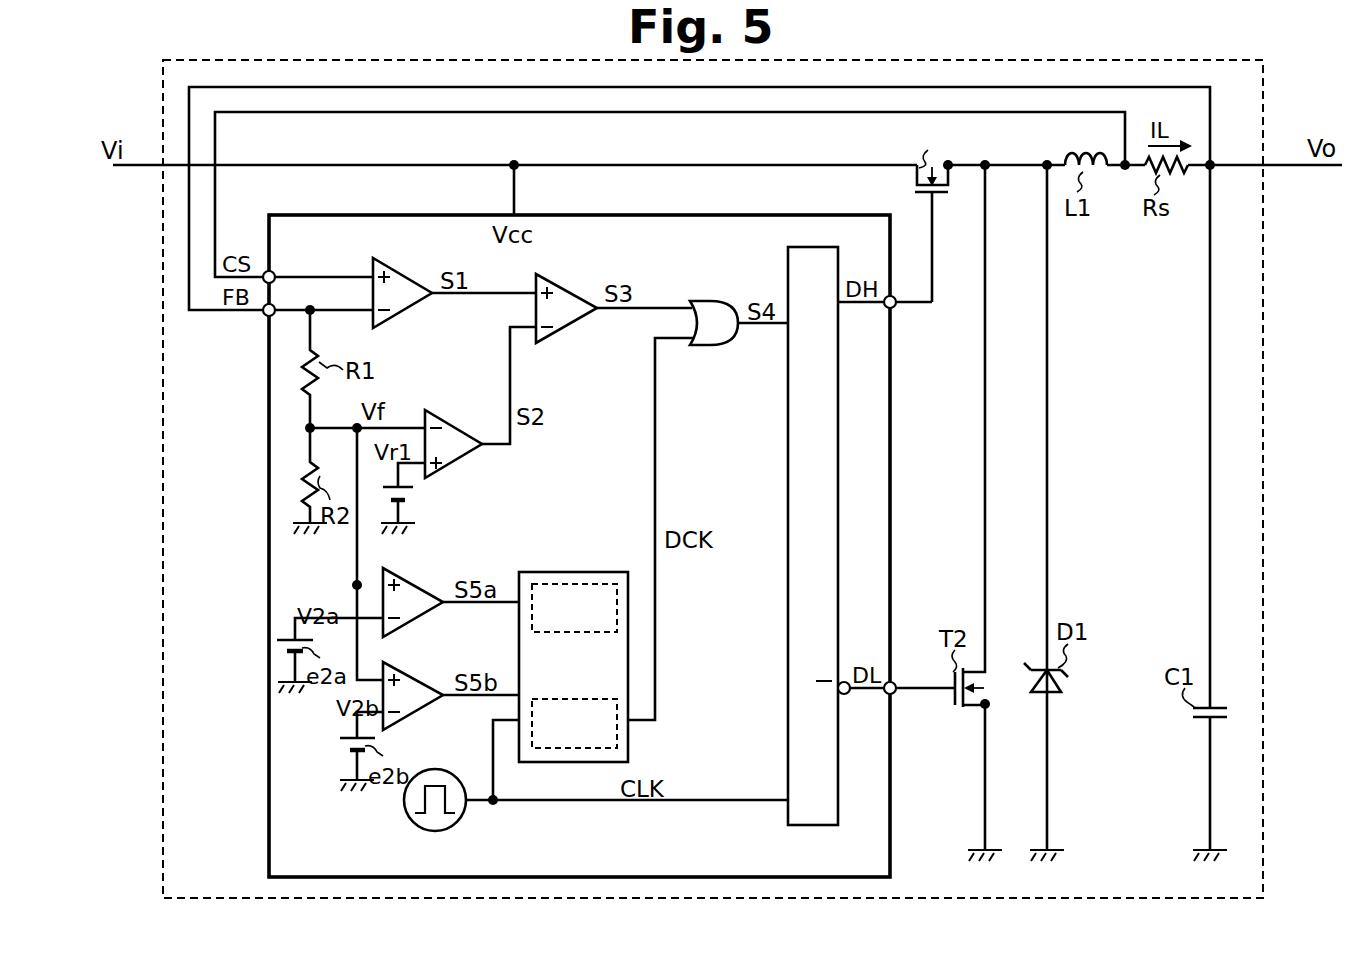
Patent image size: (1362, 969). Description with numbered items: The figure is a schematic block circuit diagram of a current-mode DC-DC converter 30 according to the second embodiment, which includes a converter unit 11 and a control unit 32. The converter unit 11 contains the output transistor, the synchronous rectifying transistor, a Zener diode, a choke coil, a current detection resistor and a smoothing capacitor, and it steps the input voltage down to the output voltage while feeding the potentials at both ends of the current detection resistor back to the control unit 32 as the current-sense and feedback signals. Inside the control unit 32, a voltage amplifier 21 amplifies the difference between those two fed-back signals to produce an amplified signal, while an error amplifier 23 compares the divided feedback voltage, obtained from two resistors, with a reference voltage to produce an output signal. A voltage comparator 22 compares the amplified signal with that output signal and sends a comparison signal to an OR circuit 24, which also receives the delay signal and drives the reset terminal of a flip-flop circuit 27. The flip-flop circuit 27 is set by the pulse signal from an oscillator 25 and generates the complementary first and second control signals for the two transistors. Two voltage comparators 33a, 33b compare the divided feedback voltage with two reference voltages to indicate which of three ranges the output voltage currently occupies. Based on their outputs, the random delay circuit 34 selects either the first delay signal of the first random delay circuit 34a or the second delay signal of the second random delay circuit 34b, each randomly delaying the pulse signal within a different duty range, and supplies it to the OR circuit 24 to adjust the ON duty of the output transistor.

The DC-DC converter 30 is at (1263, 72).
The converter unit 11 is at (902, 149).
The control unit 32 is at (815, 215).
The voltage amplifier 21 is at (391, 264).
The voltage comparator 22 is at (556, 276).
The error amplifier 23 is at (446, 412).
The OR circuit 24 is at (694, 299).
The oscillator 25 is at (456, 822).
The flip-flop circuit 27 is at (787, 405).
The voltage comparator 33a is at (414, 586).
The voltage comparator 33b is at (414, 678).
The random delay circuit 34 is at (602, 645).
The first random delay circuit 34a is at (540, 572).
The second random delay circuit 34b is at (620, 744).